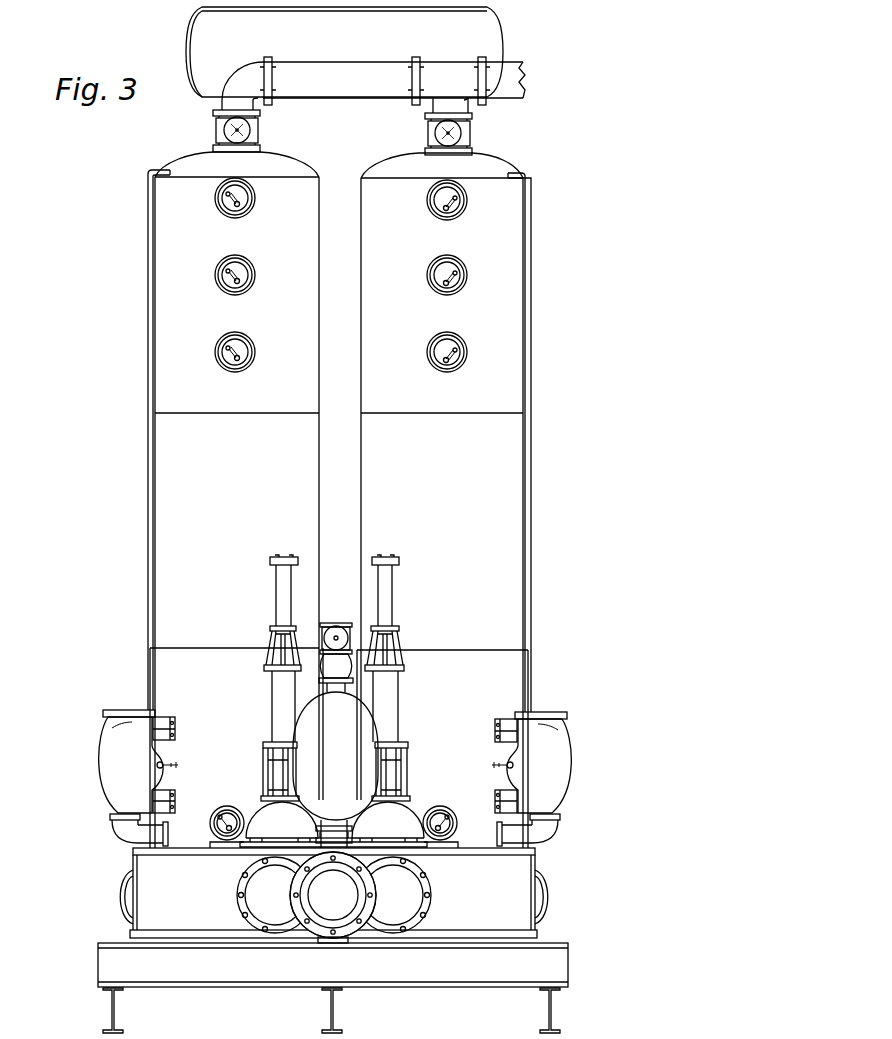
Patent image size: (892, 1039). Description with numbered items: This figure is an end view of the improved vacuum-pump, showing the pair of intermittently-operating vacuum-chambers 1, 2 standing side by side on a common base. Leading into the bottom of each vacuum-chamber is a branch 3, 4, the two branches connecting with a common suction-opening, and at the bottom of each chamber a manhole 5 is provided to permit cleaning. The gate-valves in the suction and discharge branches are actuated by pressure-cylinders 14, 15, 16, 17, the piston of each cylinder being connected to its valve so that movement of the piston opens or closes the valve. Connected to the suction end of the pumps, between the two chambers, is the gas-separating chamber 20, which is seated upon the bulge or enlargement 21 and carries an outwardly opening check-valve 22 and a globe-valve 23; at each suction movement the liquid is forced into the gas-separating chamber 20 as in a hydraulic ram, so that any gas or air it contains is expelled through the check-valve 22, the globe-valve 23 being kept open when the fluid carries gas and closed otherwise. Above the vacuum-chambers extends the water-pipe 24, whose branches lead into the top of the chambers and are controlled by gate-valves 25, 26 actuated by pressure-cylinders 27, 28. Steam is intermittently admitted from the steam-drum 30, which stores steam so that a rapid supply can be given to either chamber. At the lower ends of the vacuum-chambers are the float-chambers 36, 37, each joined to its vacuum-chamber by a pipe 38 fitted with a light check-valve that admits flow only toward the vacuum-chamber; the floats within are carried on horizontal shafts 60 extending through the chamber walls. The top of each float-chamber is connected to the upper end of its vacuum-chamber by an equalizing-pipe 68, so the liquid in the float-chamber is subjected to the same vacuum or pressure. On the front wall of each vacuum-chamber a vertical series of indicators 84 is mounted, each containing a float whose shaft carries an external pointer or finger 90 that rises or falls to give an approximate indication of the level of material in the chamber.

The vacuum-chamber 1 is at (246, 501).
The vacuum-chamber 2 is at (449, 496).
The branch 3 is at (275, 895).
The branch 4 is at (404, 896).
The manhole 5 is at (122, 884).
The pressure-cylinder 14 is at (281, 678).
The pressure-cylinder 15 is at (387, 678).
The pressure-cylinder 16 is at (284, 834).
The pressure-cylinder 17 is at (390, 834).
The gas-separating chamber 20 is at (335, 756).
The bulge or enlargement 21 is at (290, 870).
The check-valve 22 is at (336, 673).
The globe-valve 23 is at (336, 629).
The water-pipe 24 is at (373, 85).
The valve 25 is at (248, 131).
The valve 26 is at (461, 134).
The pressure-cylinder 27 is at (228, 131).
The pressure-cylinder 28 is at (440, 135).
The steam-drum 30 is at (344, 52).
The float-chamber 36 is at (137, 776).
The float-chamber 37 is at (533, 777).
The pipe 38 is at (170, 829).
The horizontal shaft 60 is at (335, 756).
The equalizing-pipe 68 is at (148, 322).
The indicator 84 is at (246, 388).
The pointer or finger 90 is at (240, 356).